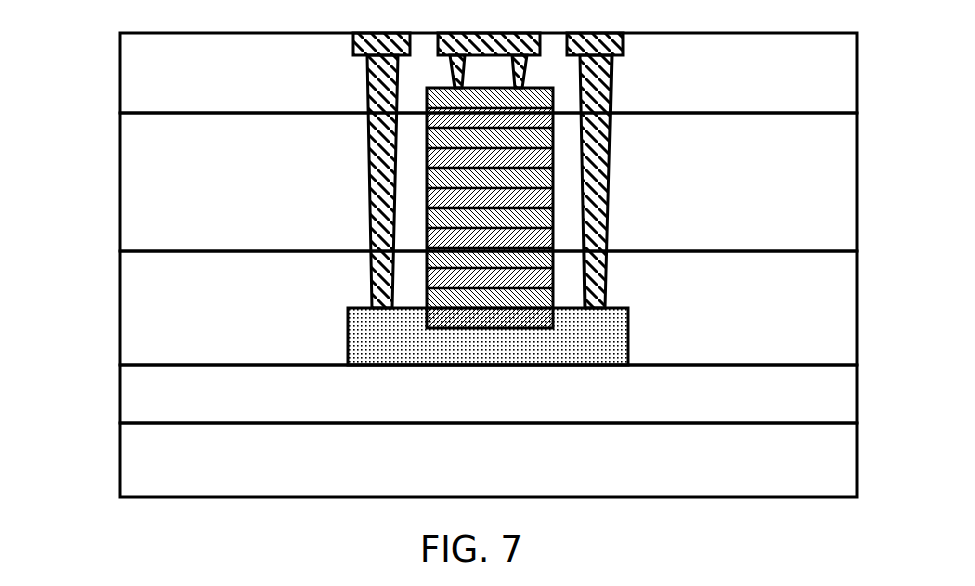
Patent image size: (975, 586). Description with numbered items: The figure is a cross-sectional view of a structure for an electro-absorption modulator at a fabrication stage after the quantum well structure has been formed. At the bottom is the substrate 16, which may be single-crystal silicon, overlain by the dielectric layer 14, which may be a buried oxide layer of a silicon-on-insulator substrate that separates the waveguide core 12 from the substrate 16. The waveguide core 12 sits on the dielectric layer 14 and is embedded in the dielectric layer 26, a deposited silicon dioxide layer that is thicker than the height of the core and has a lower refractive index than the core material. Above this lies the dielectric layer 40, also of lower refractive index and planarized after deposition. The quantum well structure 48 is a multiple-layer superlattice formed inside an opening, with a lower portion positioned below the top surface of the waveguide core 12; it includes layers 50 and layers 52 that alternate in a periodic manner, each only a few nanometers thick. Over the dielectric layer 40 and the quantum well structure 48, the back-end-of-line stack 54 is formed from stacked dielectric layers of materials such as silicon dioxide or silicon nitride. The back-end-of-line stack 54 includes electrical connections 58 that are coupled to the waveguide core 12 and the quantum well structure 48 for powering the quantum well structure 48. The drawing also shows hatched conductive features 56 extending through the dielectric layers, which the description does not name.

The waveguide core 12 is at (405, 343).
The dielectric layer 14 is at (170, 393).
The substrate 16 is at (170, 464).
The dielectric layer 26 is at (172, 306).
The dielectric layer 40 is at (153, 185).
The quantum well structure 48 is at (410, 196).
The layers 50 is at (530, 160).
The layers 52 is at (530, 218).
The back-end-of-line stack 54 is at (160, 72).
The conductive via / pillar 56 is at (383, 85).
The electrical connections 58 is at (516, 75).